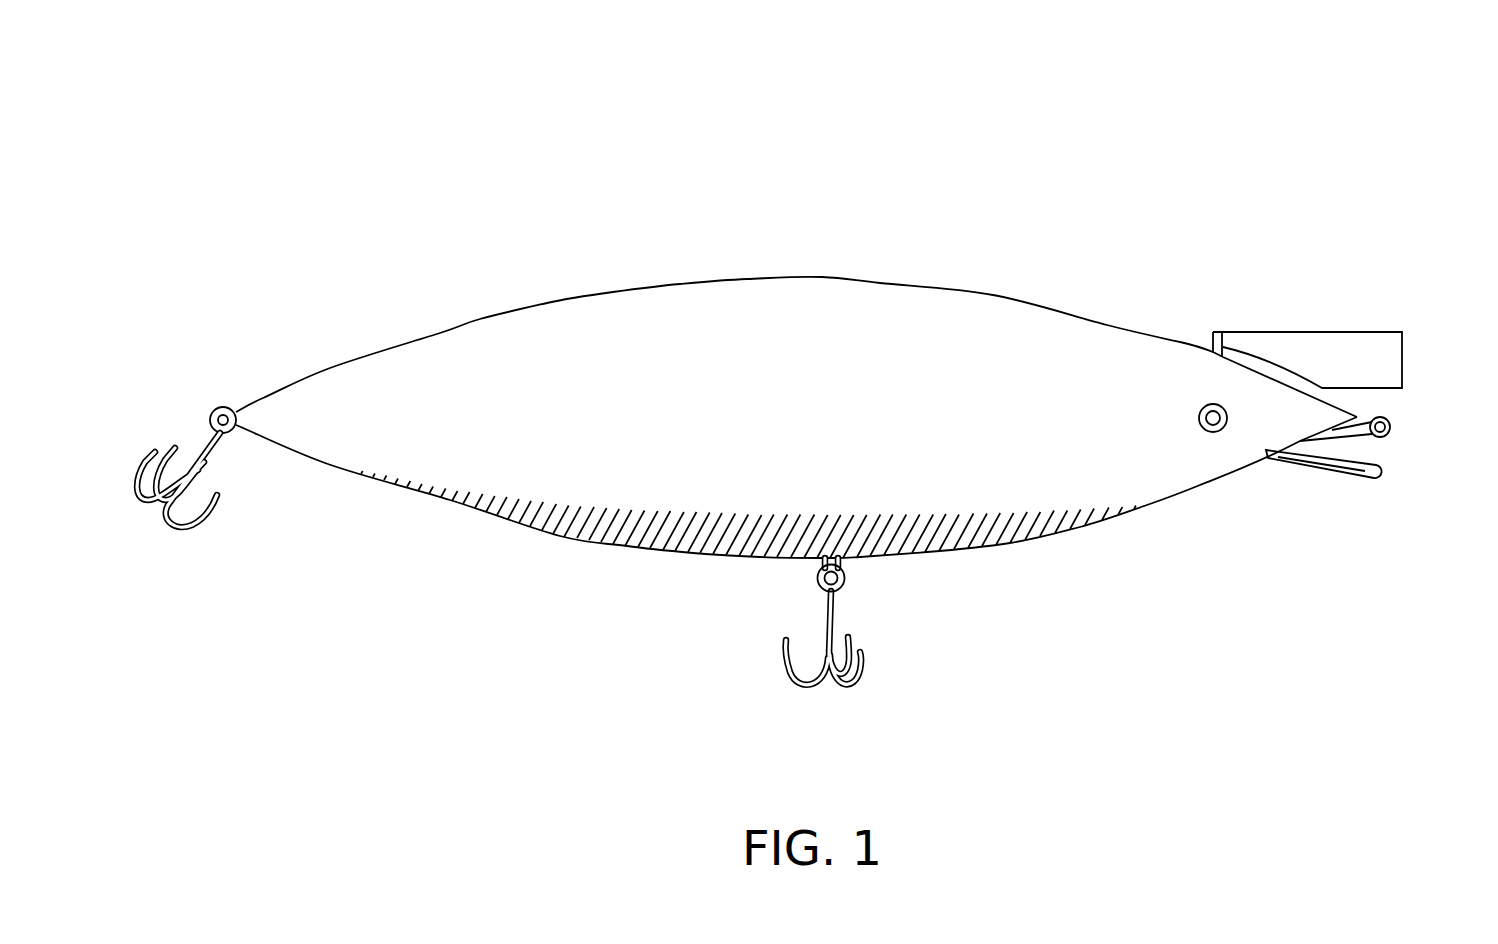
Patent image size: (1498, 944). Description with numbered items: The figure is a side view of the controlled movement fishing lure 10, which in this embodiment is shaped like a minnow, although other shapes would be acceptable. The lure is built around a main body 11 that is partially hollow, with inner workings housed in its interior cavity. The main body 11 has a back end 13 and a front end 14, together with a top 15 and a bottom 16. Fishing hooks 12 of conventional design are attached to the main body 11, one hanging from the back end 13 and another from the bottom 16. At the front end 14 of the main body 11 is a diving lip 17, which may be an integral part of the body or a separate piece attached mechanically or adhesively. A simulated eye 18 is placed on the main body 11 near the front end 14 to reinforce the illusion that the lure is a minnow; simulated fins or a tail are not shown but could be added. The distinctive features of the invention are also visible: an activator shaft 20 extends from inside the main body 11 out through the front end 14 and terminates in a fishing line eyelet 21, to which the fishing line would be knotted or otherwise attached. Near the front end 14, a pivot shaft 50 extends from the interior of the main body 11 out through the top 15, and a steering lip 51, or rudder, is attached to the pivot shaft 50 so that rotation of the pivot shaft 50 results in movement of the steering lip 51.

The controlled movement fishing lure 10 is at (807, 451).
The main body 11 is at (438, 330).
The fishing hooks 12 is at (196, 545).
The back end 13 is at (253, 390).
The front end 14 is at (1220, 495).
The top 15 is at (822, 275).
The bottom 16 is at (708, 565).
The diving lip 17 is at (1348, 480).
The simulated eye 18 is at (1203, 403).
The activator shaft 20 is at (1372, 444).
The fishing line eyelet 21 is at (1395, 424).
The pivot shaft 50 is at (1208, 332).
The steering lip 51 is at (1382, 330).